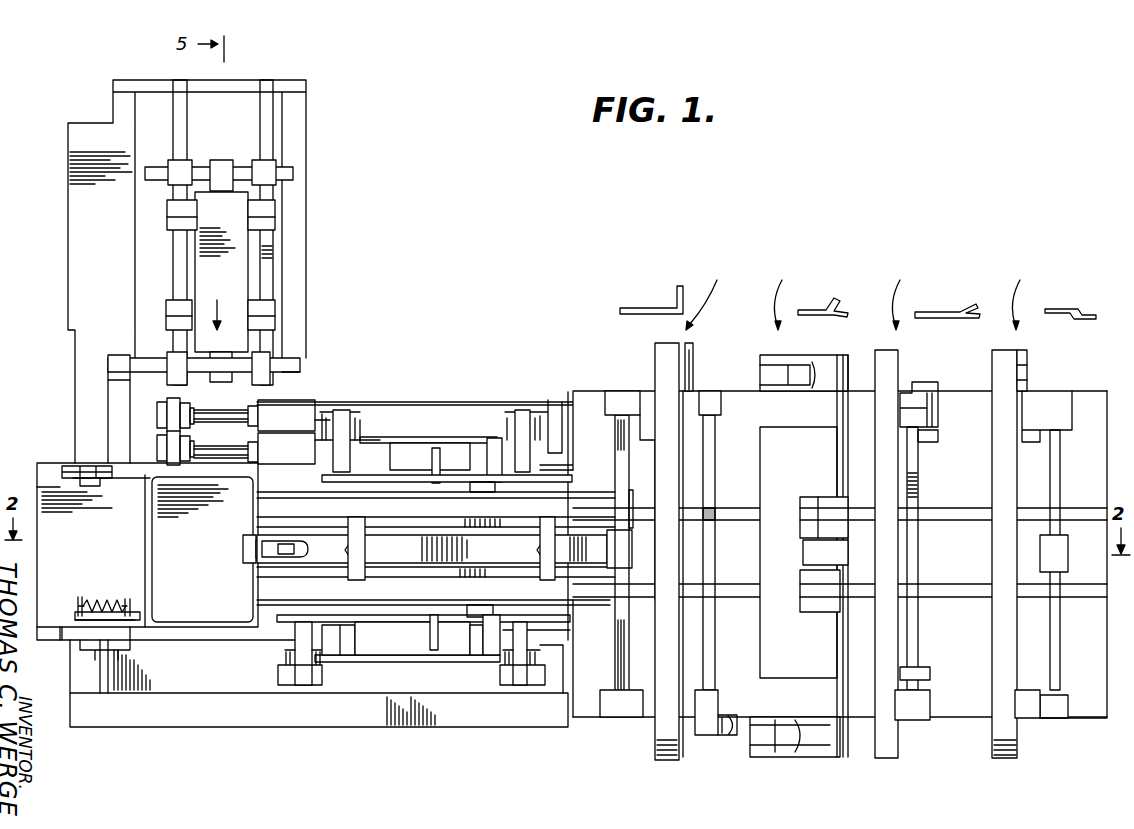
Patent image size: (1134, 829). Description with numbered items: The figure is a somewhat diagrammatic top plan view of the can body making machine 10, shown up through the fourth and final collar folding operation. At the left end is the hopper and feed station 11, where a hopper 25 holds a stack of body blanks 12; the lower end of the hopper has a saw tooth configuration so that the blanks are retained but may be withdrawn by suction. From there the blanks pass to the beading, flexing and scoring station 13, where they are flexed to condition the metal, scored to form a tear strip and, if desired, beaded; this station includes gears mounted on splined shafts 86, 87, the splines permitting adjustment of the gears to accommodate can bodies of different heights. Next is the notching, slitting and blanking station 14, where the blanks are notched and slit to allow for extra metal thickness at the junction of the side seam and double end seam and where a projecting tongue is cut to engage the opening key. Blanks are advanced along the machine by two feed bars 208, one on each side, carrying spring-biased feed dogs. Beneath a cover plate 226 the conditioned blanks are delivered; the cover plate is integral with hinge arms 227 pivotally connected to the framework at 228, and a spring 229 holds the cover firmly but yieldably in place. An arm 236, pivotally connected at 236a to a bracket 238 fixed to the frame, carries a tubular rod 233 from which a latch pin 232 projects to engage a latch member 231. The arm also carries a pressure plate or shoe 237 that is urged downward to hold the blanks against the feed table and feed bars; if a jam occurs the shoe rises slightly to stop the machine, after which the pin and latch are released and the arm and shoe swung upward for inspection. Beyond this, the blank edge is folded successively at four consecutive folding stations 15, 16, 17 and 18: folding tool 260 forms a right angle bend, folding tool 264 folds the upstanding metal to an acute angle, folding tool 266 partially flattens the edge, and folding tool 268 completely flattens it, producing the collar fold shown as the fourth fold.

The machine 10 is at (559, 366).
The hopper and feed station 11 is at (208, 271).
The body blanks 12 is at (196, 250).
The beading, flexing and scoring station 13 is at (197, 425).
The notching, slitting and blanking station 14 is at (454, 450).
The first folding station 15 is at (663, 254).
The second folding station 16 is at (821, 254).
The third folding station 17 is at (961, 254).
The fourth folding station 18 is at (1075, 254).
The hopper 25 is at (283, 222).
The splined shaft 86 is at (197, 432).
The splined shaft 87 is at (211, 407).
The feed bar 208 is at (352, 506).
The cover plate 226 is at (168, 551).
The hinge arms 227 is at (130, 642).
The pivotal connection 228 is at (54, 468).
The spring 229 is at (116, 594).
The latch member 231 is at (243, 552).
The latch pin 232 is at (282, 546).
The tubular rod 233 is at (299, 558).
The arm 236 is at (444, 552).
The pivotal connection 236a is at (607, 446).
The pressure plate or shoe 237 is at (458, 522).
The bracket 238 is at (604, 710).
The folding tool 260 is at (657, 732).
The folding tool 264 is at (808, 695).
The folding tool 266 is at (886, 655).
The folding tool 268 is at (990, 556).